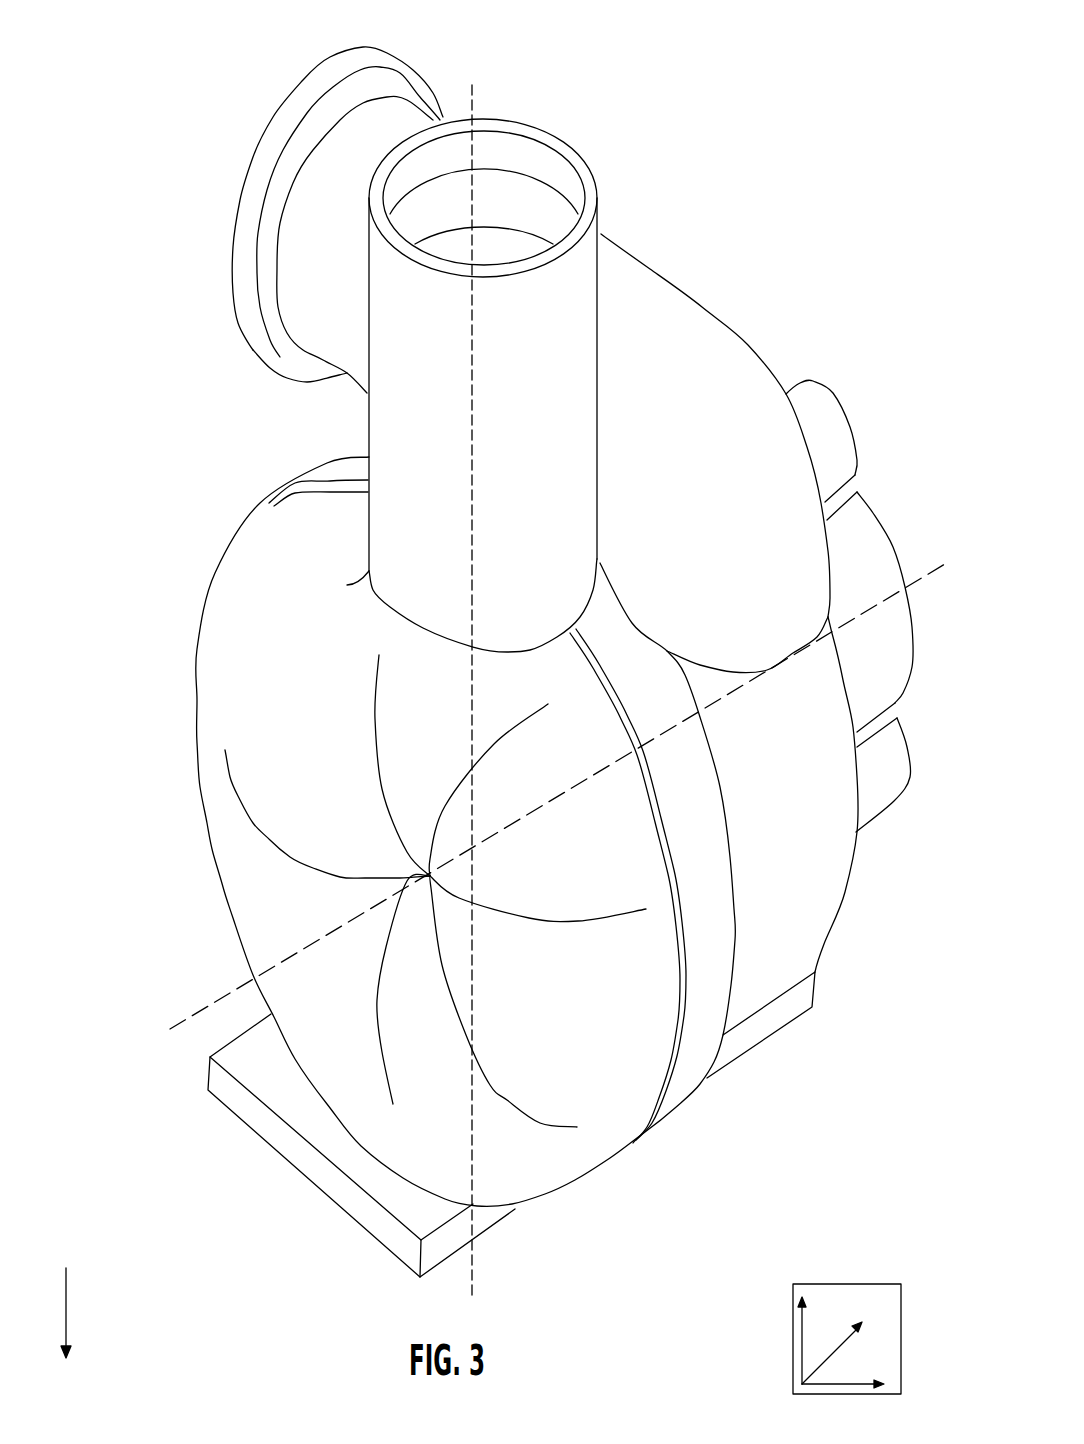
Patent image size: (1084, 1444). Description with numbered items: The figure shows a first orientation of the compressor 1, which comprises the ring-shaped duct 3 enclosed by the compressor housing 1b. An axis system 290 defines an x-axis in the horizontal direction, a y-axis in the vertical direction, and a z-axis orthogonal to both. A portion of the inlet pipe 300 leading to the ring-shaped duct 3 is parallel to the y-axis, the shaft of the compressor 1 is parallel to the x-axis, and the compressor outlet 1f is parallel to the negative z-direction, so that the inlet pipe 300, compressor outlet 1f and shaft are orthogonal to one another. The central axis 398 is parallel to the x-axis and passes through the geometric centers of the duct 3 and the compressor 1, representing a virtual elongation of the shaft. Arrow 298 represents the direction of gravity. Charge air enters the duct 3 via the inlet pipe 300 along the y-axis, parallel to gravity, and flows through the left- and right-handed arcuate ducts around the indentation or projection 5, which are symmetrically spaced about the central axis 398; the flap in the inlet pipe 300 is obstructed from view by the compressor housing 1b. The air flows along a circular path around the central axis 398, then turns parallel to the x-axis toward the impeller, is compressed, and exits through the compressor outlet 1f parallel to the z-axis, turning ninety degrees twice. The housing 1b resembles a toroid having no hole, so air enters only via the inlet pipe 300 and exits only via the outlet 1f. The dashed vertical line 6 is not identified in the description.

The compressor 1 is at (760, 210).
The compressor outlet 1f is at (315, 92).
The compressor housing 1b is at (752, 1108).
The ring-shaped duct 3 is at (95, 607).
The indentation and/or projection 5 is at (380, 862).
The vertical axis 6 is at (473, 1251).
The arrow 298 is at (67, 1297).
The axis system 290 is at (862, 1284).
The inlet pipe 300 is at (388, 391).
The central axis 398 is at (208, 1000).